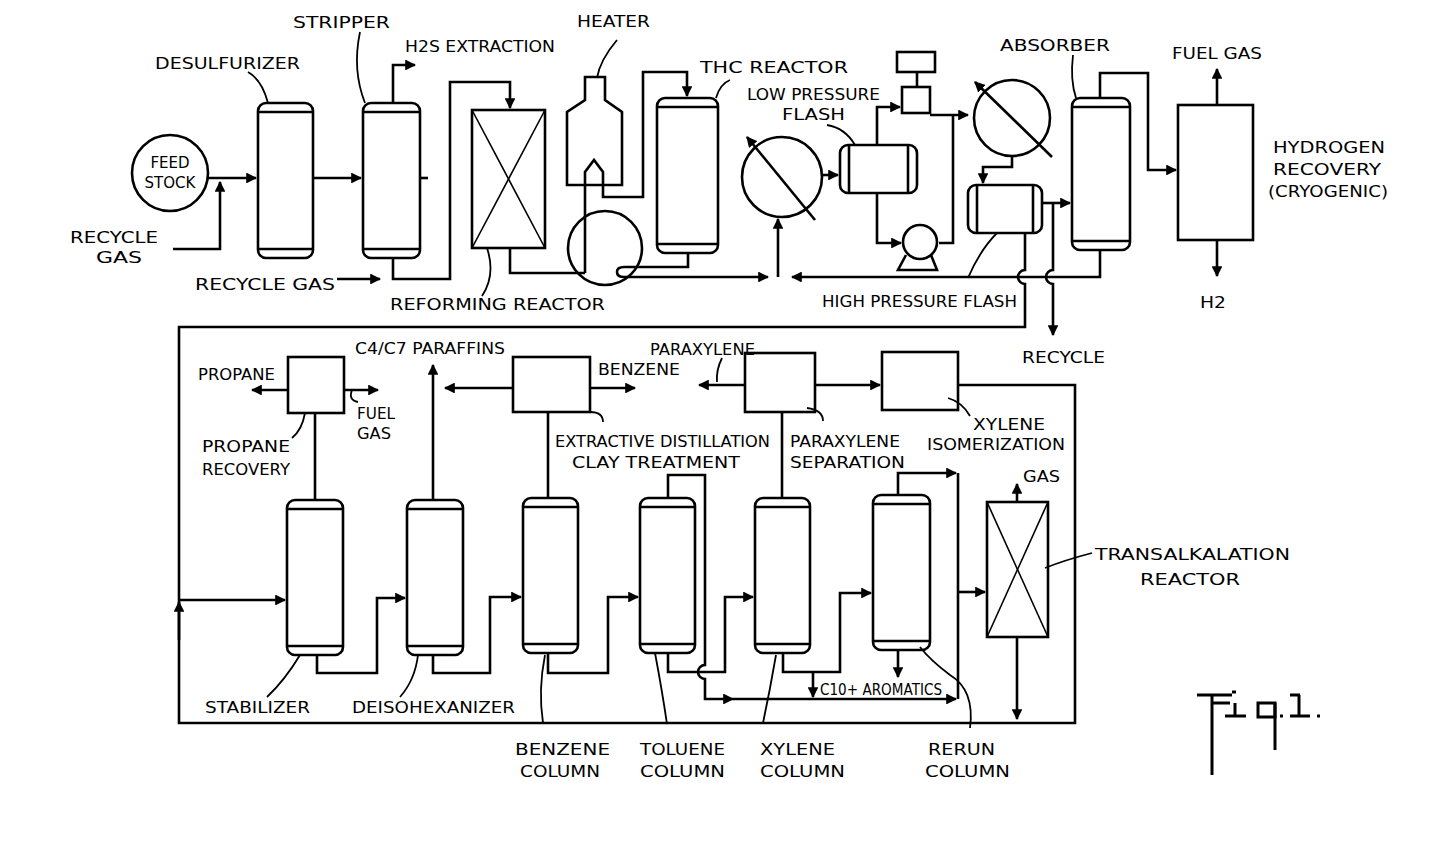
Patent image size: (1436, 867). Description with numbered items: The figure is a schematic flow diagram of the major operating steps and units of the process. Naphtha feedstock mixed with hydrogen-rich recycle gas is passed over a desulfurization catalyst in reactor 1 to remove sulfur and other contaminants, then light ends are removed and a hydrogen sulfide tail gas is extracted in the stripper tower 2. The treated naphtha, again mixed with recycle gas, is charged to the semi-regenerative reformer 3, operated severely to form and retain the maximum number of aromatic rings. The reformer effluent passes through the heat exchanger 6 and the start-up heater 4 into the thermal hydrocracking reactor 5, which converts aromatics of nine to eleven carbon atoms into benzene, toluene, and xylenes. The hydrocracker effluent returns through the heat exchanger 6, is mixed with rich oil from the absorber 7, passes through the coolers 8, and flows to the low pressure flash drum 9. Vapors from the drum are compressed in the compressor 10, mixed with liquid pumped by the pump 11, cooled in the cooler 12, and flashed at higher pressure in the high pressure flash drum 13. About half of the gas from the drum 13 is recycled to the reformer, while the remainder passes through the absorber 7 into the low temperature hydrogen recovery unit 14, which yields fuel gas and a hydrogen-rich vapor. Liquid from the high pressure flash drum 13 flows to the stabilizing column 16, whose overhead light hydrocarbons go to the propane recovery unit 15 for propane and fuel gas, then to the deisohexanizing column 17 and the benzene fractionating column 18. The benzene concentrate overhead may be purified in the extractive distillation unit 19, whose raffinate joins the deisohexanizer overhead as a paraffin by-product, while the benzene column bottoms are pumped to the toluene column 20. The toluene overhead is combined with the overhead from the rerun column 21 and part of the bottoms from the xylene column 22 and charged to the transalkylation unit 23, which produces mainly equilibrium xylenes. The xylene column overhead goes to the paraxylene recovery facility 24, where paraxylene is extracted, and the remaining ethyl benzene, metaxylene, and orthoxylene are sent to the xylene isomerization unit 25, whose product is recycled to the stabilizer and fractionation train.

The desulfurization reactor 1 is at (278, 195).
The stripper tower 2 is at (385, 195).
The semi-regenerative type reformer 3 is at (501, 147).
The start-up heater 4 is at (588, 147).
The thermal hydrocracking reactor 5 is at (685, 188).
The heat exchanger 6 is at (596, 250).
The absorber 7 is at (1095, 190).
The coolers 8 is at (784, 174).
The low pressure flash drum 9 is at (868, 181).
The compressor 10 is at (913, 108).
The pump 11 is at (920, 226).
The cooler 12 is at (989, 137).
The high pressure flash drum 13 is at (999, 220).
The low temperature hydrogen recovery unit 14 is at (1208, 190).
The propane recovery unit 15 is at (307, 400).
The stabilizing column 16 is at (306, 590).
The deisohexanizing column 17 is at (428, 590).
The benzene fractionating column 18 is at (543, 585).
The extractive distillation unit 19 is at (543, 400).
The toluene column 20 is at (660, 587).
The rerun column 21 is at (889, 590).
The xylene column 22 is at (772, 587).
The transalkylation unit 23 is at (1005, 532).
The paraxylene recovery facility 24 is at (768, 400).
The xylene isomerization unit 25 is at (912, 398).